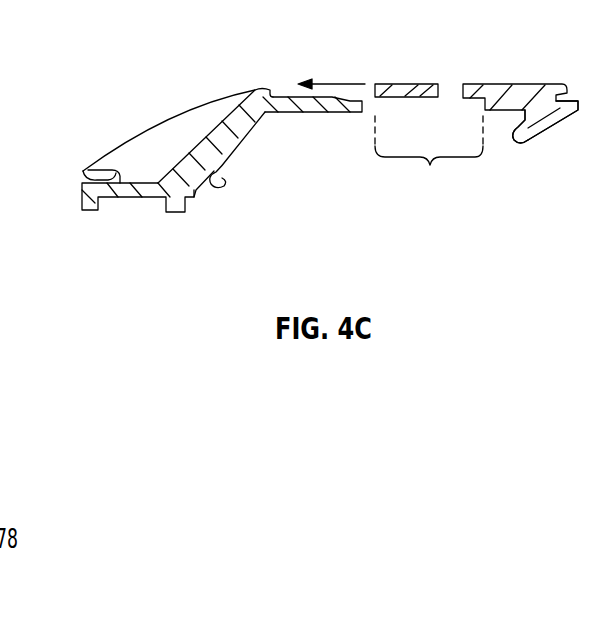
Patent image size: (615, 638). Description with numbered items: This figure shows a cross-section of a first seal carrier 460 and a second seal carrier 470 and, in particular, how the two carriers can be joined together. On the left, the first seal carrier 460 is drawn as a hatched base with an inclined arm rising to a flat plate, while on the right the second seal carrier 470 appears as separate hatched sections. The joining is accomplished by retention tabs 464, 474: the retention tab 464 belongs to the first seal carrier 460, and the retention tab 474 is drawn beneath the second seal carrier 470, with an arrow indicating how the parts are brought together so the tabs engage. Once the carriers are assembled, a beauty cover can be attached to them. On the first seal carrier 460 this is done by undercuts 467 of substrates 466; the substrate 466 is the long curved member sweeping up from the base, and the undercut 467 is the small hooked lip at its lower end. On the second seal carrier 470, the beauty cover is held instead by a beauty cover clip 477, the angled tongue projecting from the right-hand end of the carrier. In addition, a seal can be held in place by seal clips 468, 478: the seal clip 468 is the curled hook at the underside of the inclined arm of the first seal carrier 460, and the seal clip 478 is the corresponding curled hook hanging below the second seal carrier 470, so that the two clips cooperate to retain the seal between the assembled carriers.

The first seal carrier 460 is at (176, 213).
The retention tab 464 is at (333, 97).
The substrate 466 is at (158, 125).
The undercut 467 is at (82, 173).
The seal clip 468 is at (222, 177).
The second seal carrier 470 is at (410, 84).
The retention tab 474 is at (429, 157).
The beauty cover clip 477 is at (557, 97).
The seal clip 478 is at (513, 141).